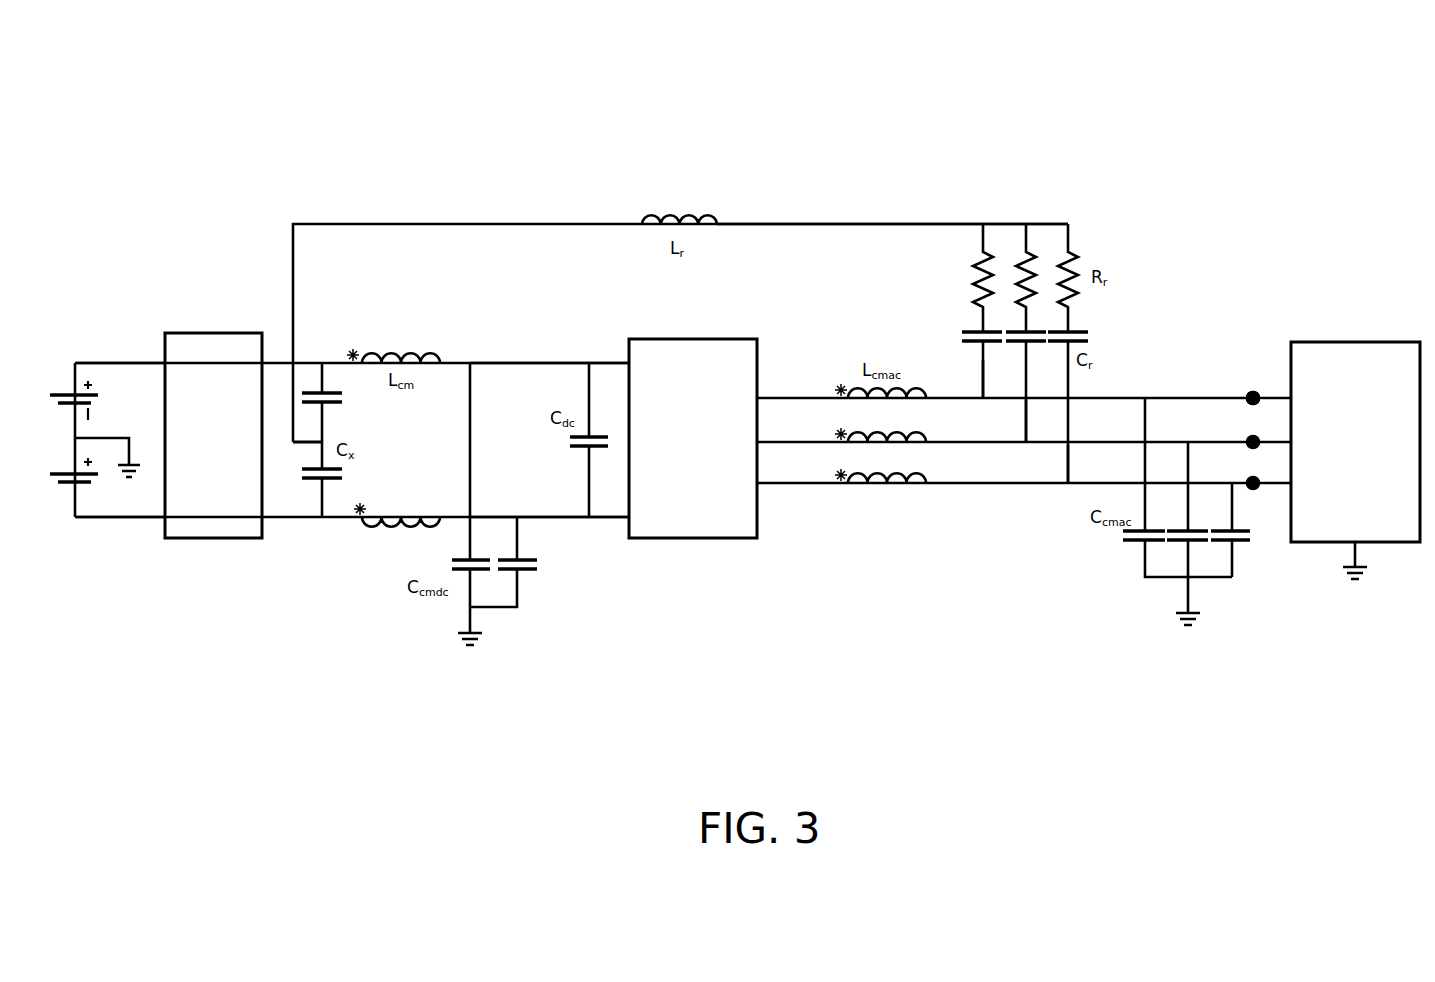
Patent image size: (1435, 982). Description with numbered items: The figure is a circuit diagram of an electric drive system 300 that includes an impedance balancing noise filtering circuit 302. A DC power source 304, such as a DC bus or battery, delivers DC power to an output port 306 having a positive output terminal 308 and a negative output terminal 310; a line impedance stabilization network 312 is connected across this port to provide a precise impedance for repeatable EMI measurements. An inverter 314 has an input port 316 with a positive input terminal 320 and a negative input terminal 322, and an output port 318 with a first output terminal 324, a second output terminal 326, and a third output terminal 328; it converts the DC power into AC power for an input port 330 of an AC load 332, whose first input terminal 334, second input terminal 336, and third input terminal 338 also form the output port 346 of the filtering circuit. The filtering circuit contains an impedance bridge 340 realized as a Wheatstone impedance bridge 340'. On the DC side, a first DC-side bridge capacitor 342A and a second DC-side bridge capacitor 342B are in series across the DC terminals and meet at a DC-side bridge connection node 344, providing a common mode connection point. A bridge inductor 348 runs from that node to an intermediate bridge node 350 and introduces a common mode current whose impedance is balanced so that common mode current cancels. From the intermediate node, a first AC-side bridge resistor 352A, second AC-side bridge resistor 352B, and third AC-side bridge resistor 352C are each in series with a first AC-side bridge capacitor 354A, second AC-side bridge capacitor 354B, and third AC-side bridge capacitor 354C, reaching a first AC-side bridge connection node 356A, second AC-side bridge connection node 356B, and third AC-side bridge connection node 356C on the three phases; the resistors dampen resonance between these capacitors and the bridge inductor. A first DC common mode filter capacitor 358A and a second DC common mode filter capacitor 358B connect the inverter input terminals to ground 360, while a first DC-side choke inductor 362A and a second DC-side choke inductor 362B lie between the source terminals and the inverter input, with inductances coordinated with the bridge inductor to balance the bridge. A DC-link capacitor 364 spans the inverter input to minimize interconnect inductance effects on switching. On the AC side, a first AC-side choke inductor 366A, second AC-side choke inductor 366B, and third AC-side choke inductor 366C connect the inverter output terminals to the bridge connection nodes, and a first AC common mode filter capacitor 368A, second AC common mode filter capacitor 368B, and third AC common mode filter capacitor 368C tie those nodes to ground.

The electric drive system 300 is at (1313, 115).
The impedance balancing noise filtering circuit 302 is at (1130, 167).
The DC power source 304 is at (56, 371).
The output port 306 is at (132, 300).
The positive output terminal 308 is at (140, 363).
The negative output terminal 310 is at (140, 517).
The line impedance stabilization network 312 is at (213, 435).
The inverter 314 is at (693, 438).
The input port 316 is at (618, 342).
The output port 318 is at (780, 388).
The positive input terminal 320 is at (610, 361).
The negative input terminal 322 is at (613, 519).
The first output terminal 324 is at (798, 398).
The second output terminal 326 is at (811, 442).
The third output terminal 328 is at (802, 485).
The input port 330 is at (1287, 327).
The AC load 332 is at (1355, 460).
The first input terminal 334 is at (1280, 398).
The second input terminal 336 is at (1270, 442).
The third input terminal 338 is at (1272, 485).
The impedance bridge 340 is at (405, 176).
The Wheatstone impedance bridge 340' is at (614, 168).
The first DC-side bridge capacitor 342A is at (338, 395).
The second DC-side bridge capacitor 342B is at (335, 485).
The DC-side bridge connection node 344 is at (328, 442).
The output port 346 is at (1240, 390).
The bridge inductor 348 is at (685, 212).
The intermediate bridge node 350 is at (873, 224).
The first AC-side bridge resistor 352A is at (983, 267).
The second AC-side bridge resistor 352B is at (1023, 265).
The third AC-side bridge resistor 352C is at (1073, 250).
The first AC-side bridge capacitor 354A is at (978, 332).
The second AC-side bridge capacitor 354B is at (1037, 332).
The third AC-side bridge capacitor 354C is at (1077, 332).
The first AC-side bridge connection node 356A is at (1122, 398).
The second AC-side bridge connection node 356B is at (1162, 442).
The third AC-side bridge connection node 356C is at (1093, 485).
The first DC common mode filter capacitor 358A is at (462, 560).
The second DC common mode filter capacitor 358B is at (525, 556).
The ground 360 is at (474, 647).
The first DC-side choke inductor 362A is at (410, 352).
The second DC-side choke inductor 362B is at (375, 528).
The DC-link capacitor 364 is at (577, 447).
The first AC-side choke inductor 366A is at (897, 388).
The second AC-side choke inductor 366B is at (897, 432).
The third AC-side choke inductor 366C is at (897, 473).
The first AC common mode filter capacitor 368A is at (1137, 543).
The second AC common mode filter capacitor 368B is at (1195, 543).
The third AC common mode filter capacitor 368C is at (1238, 543).